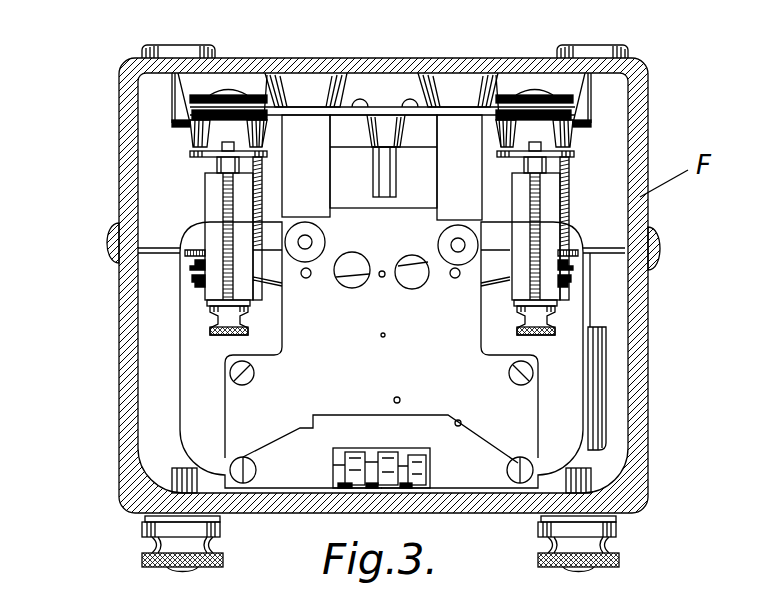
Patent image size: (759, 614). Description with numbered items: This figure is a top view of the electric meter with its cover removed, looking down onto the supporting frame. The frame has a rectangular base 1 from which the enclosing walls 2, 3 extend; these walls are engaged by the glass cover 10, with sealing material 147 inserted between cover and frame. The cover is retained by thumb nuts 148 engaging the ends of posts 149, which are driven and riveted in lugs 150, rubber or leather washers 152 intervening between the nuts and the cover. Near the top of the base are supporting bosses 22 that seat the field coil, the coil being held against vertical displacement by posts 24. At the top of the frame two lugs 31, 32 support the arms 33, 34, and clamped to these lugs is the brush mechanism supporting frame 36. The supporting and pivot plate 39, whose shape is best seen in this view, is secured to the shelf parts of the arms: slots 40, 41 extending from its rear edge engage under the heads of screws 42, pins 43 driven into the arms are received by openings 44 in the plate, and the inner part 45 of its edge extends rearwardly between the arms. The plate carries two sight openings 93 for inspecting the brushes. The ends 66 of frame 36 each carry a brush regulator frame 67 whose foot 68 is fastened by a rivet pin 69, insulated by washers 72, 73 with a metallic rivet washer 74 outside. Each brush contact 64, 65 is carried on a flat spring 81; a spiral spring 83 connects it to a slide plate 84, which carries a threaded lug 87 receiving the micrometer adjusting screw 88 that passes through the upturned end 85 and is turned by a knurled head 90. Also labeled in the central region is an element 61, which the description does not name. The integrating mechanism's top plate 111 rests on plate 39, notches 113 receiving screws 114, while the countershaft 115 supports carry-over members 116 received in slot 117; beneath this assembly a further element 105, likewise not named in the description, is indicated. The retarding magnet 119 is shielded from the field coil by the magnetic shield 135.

The rectangular base 1 is at (285, 62).
The wall 2 is at (640, 157).
The wall 3 is at (127, 187).
The cover 10 is at (122, 434).
The supporting bosses 22 is at (380, 122).
The pins or posts 24 is at (382, 167).
The lug 31 is at (310, 85).
The lug 32 is at (448, 85).
The arm 33 is at (306, 166).
The arm 34 is at (459, 167).
The brush mechanism supporting frame 36 is at (297, 110).
The supporting and pivot plate 39 is at (421, 310).
The slot 40 is at (320, 222).
The slot 41 is at (447, 223).
The screws 42 is at (316, 262).
The pins 43 is at (303, 280).
The openings 44 is at (304, 279).
The inner part of plate edge 45 is at (398, 207).
The pivot pin 61 is at (384, 277).
The brush terminal 64 is at (412, 272).
The brush terminal 65 is at (352, 270).
The ends of brush mechanism supporting frame 66 is at (583, 123).
The brush regulator frame 67 is at (550, 223).
The foot of brush frame 68 is at (197, 128).
The pin or rivet 69 is at (208, 91).
The insulating washer 72 is at (200, 118).
The insulating washer 73 is at (198, 100).
The rivet washer 74 is at (247, 92).
The flat spring 81 is at (268, 283).
The spiral spring 83 is at (257, 206).
The slide plate 84 is at (198, 155).
The upturned end of brush frame 85 is at (208, 303).
The threaded lug 87 is at (205, 192).
The micrometer adjusting screw 88 is at (222, 208).
The knurled head 90 is at (542, 343).
The sight openings 93 is at (371, 285).
The switch block 105 is at (340, 488).
The top plate 111 is at (293, 450).
The notches 113 is at (245, 457).
The screws 114 is at (256, 473).
The countershaft 115 is at (340, 462).
The carry-over members 116 is at (410, 488).
The slot 117 is at (372, 450).
The retarding magnet 119 is at (595, 328).
The magnetic shield 135 is at (182, 380).
The sealing material 147 is at (605, 243).
The thumb nuts 148 is at (153, 566).
The posts 149 is at (590, 110).
The lugs 150 is at (620, 82).
The washers 152 is at (147, 520).